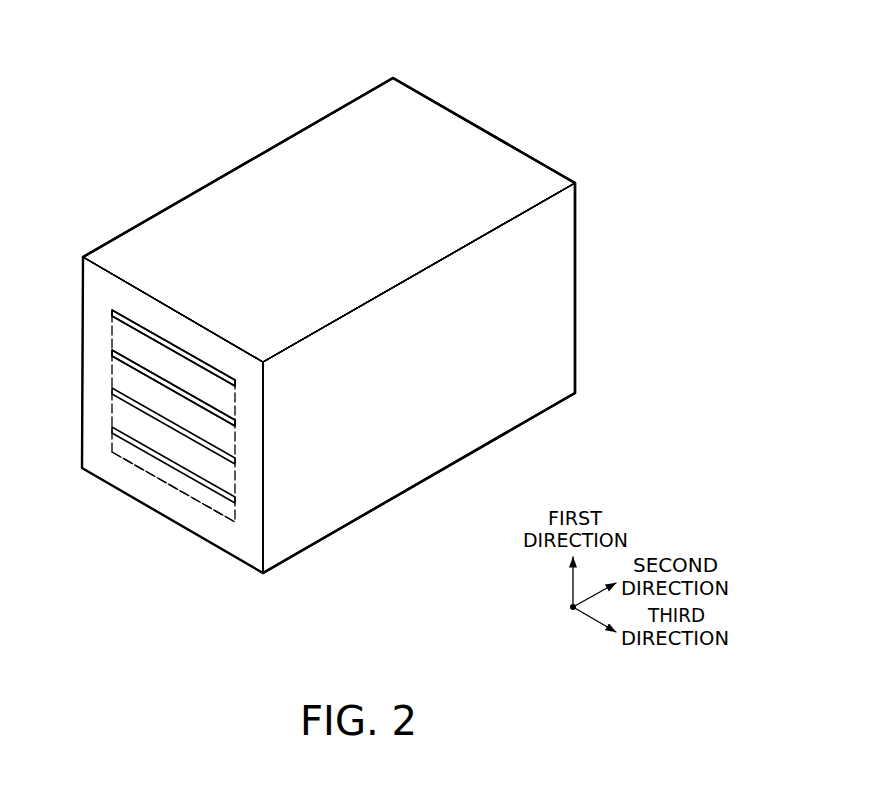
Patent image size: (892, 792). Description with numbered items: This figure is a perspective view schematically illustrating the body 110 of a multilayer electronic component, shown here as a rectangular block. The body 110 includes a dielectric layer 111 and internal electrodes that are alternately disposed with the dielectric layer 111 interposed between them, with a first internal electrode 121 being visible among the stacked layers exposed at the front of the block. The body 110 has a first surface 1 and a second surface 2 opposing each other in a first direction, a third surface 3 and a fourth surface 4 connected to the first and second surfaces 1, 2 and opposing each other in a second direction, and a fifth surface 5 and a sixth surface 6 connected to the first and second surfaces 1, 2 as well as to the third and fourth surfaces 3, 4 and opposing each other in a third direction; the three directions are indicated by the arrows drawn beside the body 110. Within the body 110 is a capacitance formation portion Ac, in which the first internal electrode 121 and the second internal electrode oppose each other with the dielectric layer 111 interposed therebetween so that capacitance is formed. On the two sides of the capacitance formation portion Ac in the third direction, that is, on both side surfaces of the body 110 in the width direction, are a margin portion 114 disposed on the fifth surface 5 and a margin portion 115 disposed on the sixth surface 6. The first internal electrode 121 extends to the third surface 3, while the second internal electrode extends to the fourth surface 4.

The body 110 is at (165, 28).
The first surface 1 is at (390, 470).
The second surface 2 is at (360, 137).
The third surface 3 is at (161, 468).
The fourth surface 4 is at (484, 157).
The fifth surface 5 is at (191, 224).
The sixth surface 6 is at (507, 387).
The dielectric layer 111 is at (122, 368).
The margin portion 114 is at (93, 431).
The margin portion 115 is at (248, 514).
The first internal electrode 121 is at (133, 326).
The capacitance formation portion Ac is at (199, 505).